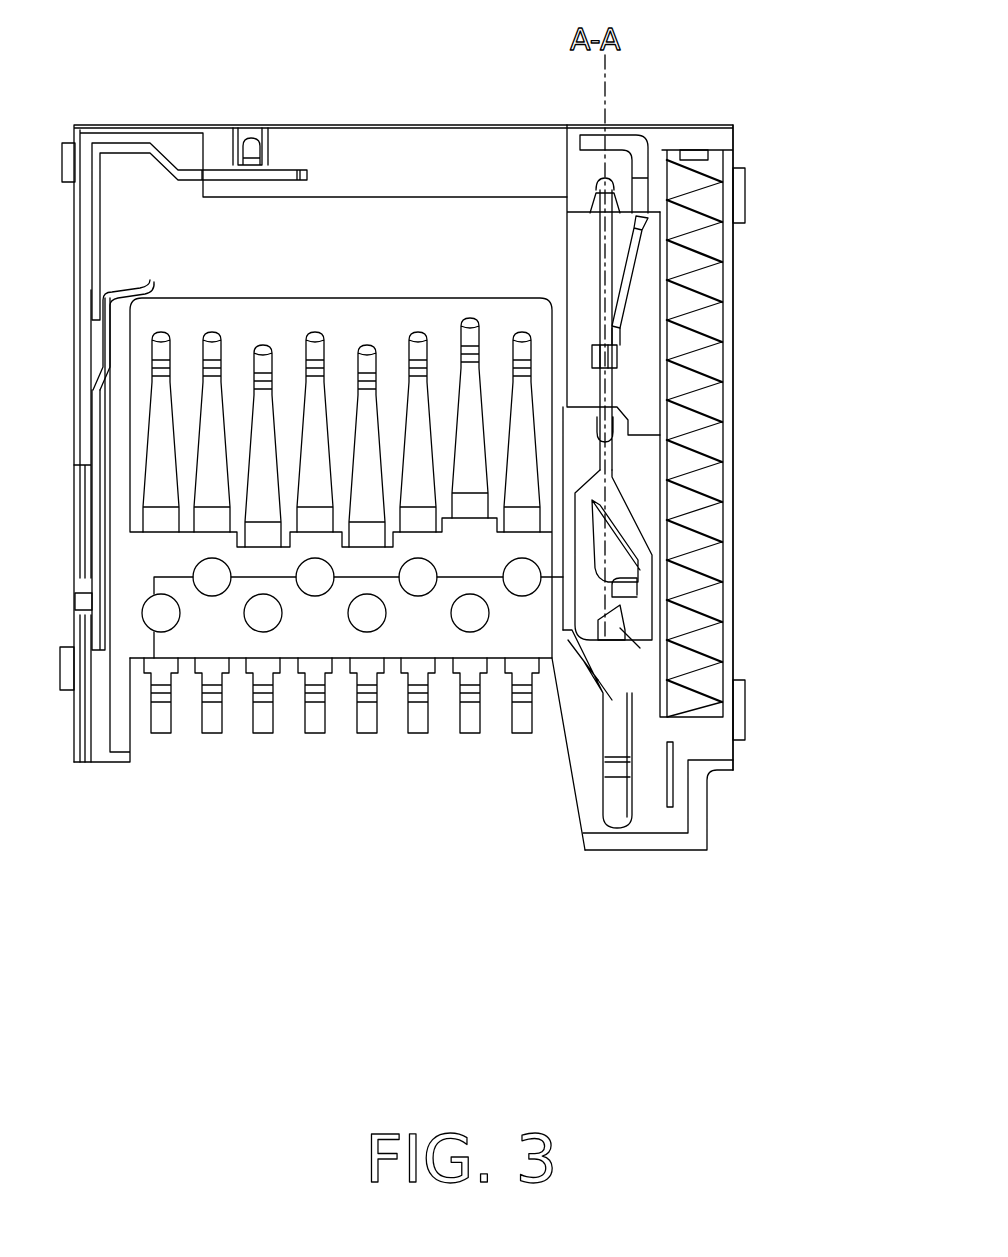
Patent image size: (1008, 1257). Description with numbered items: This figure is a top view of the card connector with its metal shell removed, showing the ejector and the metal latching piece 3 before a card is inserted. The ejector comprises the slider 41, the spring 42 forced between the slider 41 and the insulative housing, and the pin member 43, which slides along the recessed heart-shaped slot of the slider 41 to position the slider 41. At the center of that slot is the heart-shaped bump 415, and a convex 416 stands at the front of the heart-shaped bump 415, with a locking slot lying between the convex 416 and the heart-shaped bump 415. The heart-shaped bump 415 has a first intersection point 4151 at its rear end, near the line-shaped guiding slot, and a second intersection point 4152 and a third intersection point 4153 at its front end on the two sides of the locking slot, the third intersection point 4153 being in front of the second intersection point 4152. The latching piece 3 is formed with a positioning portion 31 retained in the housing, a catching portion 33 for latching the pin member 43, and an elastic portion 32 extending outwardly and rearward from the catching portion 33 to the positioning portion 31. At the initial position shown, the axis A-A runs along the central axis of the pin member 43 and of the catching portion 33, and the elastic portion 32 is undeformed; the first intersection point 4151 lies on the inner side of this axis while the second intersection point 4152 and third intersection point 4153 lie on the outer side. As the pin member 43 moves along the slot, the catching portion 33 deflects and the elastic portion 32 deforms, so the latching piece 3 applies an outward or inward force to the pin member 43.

The metal latching piece 3 is at (607, 220).
The positioning portion 31 is at (622, 142).
The elastic portion 32 is at (632, 262).
The catching portion 33 is at (607, 355).
The slider 41 is at (643, 690).
The spring 42 is at (697, 447).
The pin member 43 is at (690, 157).
The heart-shaped bump 415 is at (613, 560).
The first intersection point 4151 is at (592, 500).
The second intersection point 4152 is at (637, 588).
The third intersection point 4153 is at (607, 583).
The convex 416 is at (620, 628).